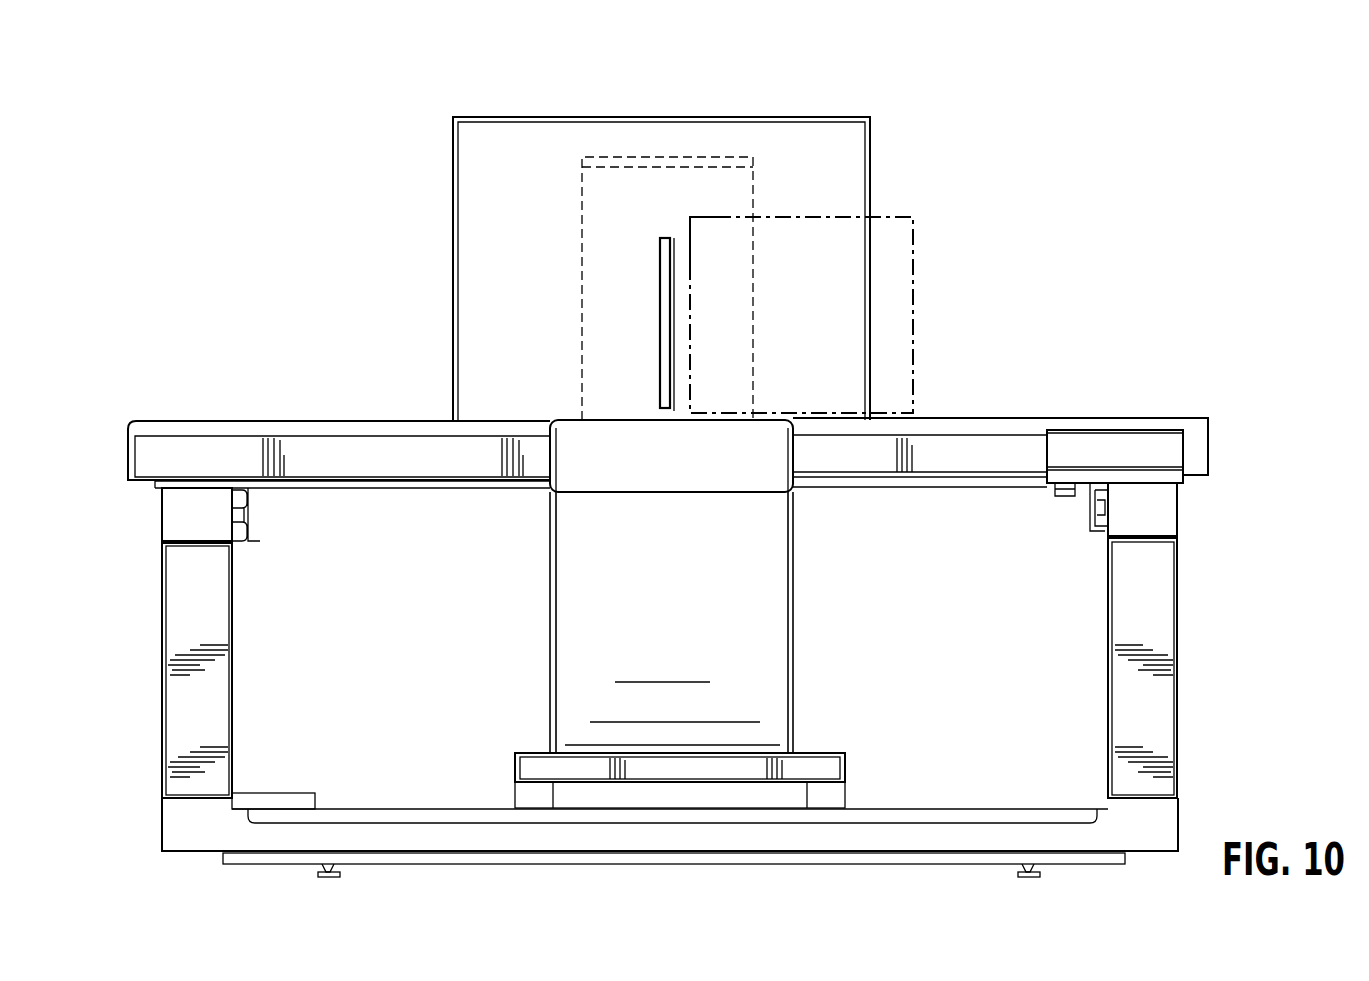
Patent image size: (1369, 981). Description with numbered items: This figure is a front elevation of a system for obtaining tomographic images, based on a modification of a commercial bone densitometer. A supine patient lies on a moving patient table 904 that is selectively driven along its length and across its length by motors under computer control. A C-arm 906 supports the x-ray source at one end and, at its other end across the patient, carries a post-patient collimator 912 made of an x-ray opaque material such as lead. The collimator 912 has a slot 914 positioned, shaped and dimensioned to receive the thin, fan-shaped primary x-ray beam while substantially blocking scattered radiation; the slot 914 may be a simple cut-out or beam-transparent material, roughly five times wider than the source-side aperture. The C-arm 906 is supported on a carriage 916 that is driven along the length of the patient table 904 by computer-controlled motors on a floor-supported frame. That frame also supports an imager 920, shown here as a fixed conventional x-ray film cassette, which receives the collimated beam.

The post-patient collimator 912 is at (807, 143).
The slot 914 is at (661, 258).
The imager 920 is at (898, 235).
The patient table 904 is at (970, 415).
The C-arm 906 is at (793, 580).
The carriage 916 is at (830, 762).